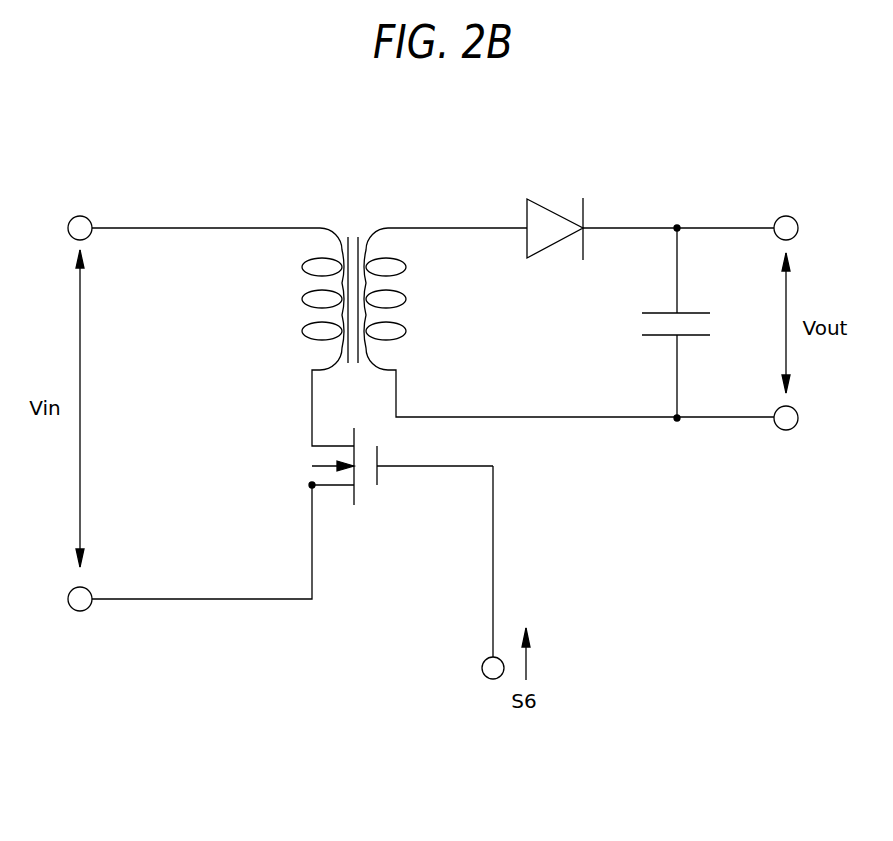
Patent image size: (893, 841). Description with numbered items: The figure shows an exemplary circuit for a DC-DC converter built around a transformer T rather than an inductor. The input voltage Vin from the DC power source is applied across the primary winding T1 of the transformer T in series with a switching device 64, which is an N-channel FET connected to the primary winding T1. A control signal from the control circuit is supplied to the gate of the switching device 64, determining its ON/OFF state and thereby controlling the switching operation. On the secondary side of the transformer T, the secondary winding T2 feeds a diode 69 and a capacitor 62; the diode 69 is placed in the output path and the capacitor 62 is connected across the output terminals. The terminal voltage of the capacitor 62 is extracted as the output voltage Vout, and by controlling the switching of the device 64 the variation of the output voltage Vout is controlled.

The capacitor 62 is at (692, 312).
The switching device 64 is at (356, 435).
The diode 69 is at (542, 204).
The transformer T is at (275, 160).
The primary winding T1 is at (317, 227).
The secondary winding T2 is at (391, 227).